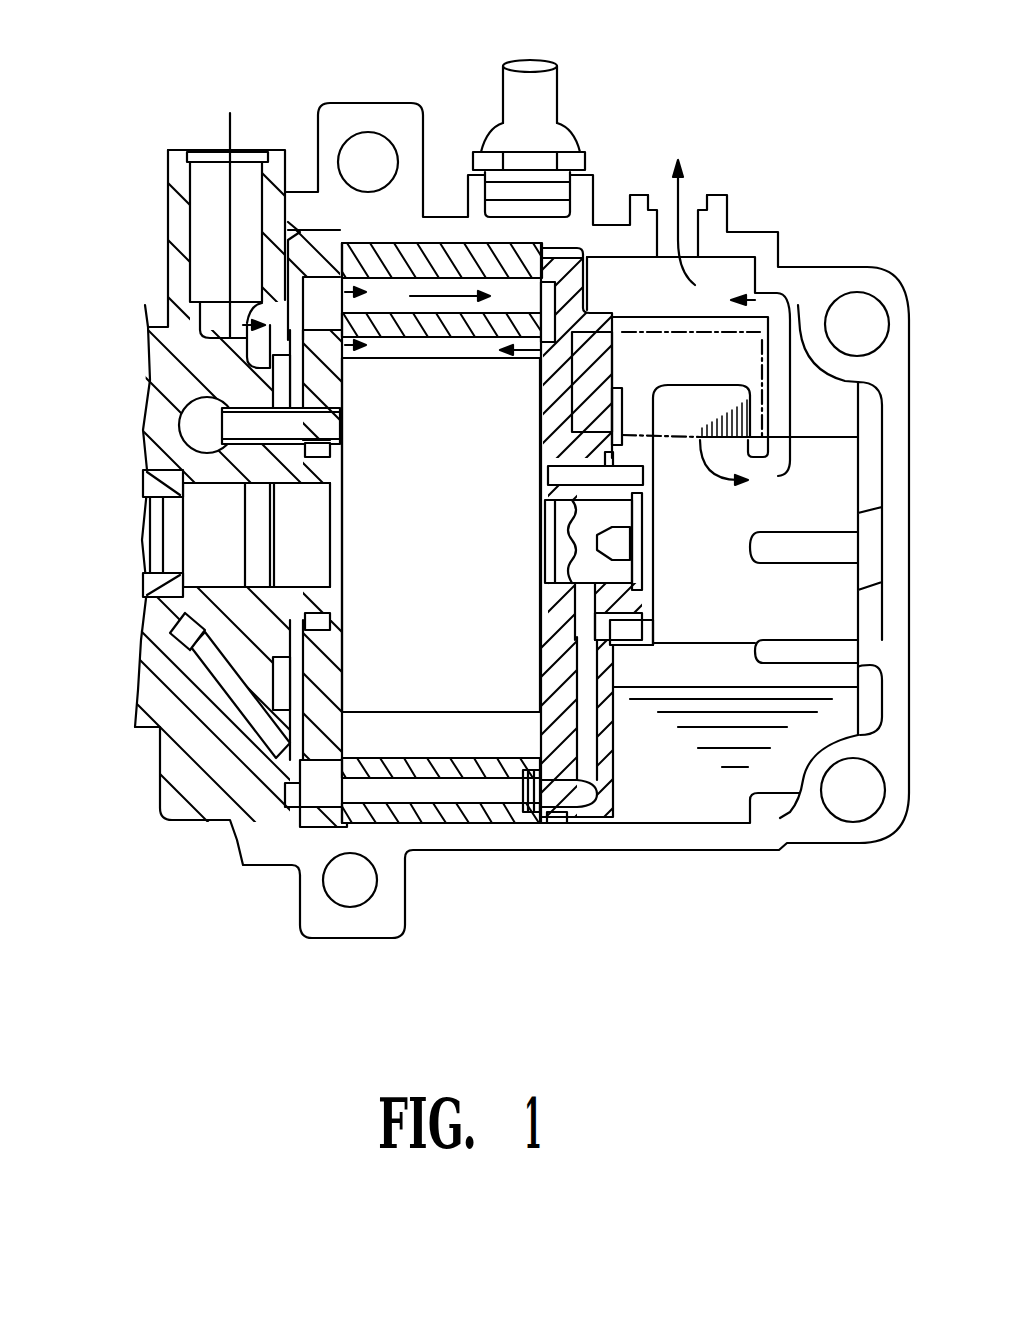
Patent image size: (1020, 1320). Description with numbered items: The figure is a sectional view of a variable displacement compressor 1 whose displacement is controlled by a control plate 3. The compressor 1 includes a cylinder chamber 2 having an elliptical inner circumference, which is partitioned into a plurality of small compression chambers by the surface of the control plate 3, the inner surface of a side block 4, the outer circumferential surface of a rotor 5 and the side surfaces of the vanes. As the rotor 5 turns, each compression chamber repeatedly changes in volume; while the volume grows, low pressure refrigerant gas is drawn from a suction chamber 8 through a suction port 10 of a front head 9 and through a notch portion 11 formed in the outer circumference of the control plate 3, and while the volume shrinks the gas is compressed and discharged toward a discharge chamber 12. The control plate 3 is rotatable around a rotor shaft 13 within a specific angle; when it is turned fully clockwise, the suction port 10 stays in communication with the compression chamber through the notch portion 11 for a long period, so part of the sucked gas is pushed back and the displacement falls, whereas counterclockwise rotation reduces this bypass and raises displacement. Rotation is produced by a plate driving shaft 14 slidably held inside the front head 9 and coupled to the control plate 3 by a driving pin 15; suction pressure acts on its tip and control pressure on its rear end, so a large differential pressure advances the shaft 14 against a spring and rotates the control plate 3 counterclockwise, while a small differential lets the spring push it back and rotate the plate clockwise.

The compressor 1 is at (805, 200).
The cylinder chamber 2 is at (499, 747).
The control plate 3 is at (287, 745).
The side block 4 is at (607, 792).
The rotor 5 is at (452, 578).
The suction chamber 8 is at (317, 324).
The front head 9 is at (180, 822).
The suction port 10 is at (318, 340).
The notch portion 11 is at (323, 283).
The discharge chamber 12 is at (830, 503).
The rotor shaft 13 is at (200, 540).
The plate driving shaft 14 is at (197, 428).
The driving pin 15 is at (193, 400).